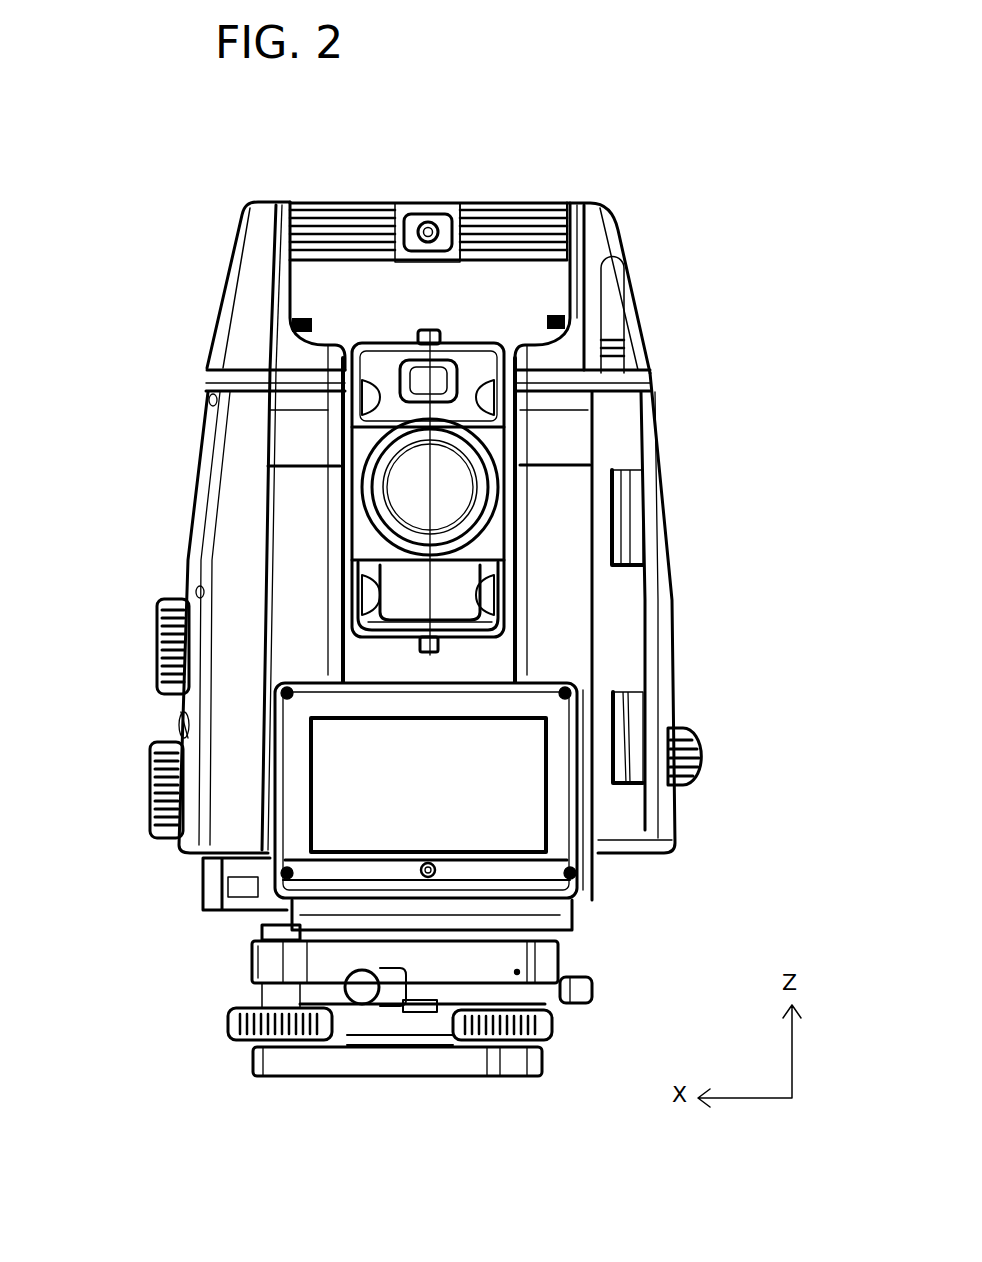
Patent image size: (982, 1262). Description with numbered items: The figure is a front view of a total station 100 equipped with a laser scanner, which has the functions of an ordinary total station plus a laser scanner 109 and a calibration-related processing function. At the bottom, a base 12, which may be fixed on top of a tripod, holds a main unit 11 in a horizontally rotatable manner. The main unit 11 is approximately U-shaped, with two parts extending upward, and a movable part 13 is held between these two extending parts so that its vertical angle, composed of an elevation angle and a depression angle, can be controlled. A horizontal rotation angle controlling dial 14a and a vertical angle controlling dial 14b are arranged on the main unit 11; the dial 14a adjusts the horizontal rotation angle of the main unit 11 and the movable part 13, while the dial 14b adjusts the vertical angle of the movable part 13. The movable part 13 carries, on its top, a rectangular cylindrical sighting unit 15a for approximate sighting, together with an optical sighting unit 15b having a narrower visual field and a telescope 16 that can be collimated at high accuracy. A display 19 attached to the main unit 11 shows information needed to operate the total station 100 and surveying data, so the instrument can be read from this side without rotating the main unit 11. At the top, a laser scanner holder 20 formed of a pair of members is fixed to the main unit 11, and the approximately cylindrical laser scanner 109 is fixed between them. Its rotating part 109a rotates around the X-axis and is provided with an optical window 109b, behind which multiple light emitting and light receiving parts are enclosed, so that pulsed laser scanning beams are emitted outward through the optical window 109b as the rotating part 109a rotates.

The total station (TS) 100 is at (172, 398).
The laser scanner 109 is at (323, 205).
The rotating part 109a is at (445, 204).
The optical window 109b is at (421, 214).
The sighting unit 15a is at (423, 335).
The optical sighting unit 15b is at (447, 348).
The laser scanner holder 20 is at (255, 275).
The main unit 11 is at (230, 497).
The telescope 16 is at (453, 485).
The movable part 13 is at (452, 605).
The horizontal rotation angle controlling dial 14a is at (157, 622).
The vertical angle controlling dial 14b is at (155, 758).
The display 19 is at (515, 828).
The base 12 is at (272, 960).